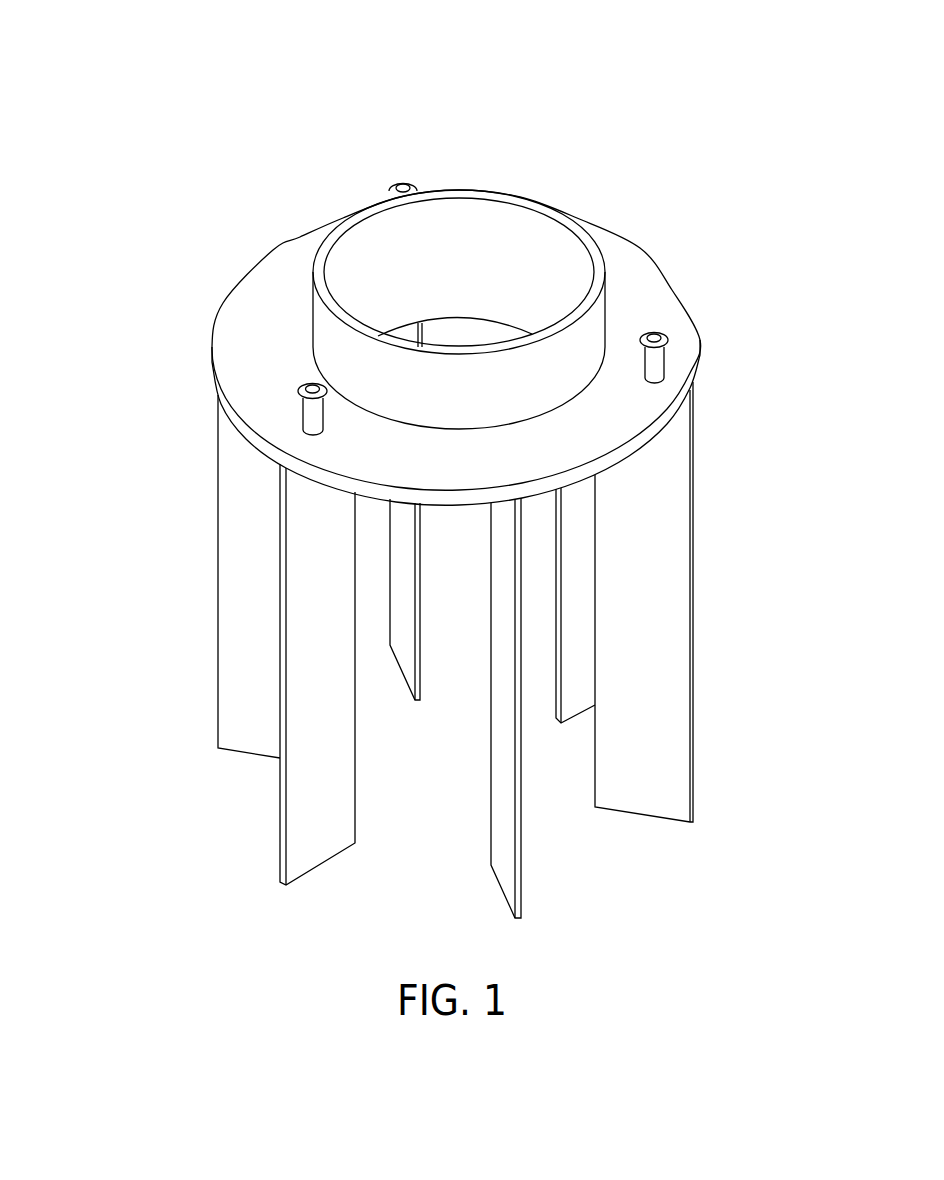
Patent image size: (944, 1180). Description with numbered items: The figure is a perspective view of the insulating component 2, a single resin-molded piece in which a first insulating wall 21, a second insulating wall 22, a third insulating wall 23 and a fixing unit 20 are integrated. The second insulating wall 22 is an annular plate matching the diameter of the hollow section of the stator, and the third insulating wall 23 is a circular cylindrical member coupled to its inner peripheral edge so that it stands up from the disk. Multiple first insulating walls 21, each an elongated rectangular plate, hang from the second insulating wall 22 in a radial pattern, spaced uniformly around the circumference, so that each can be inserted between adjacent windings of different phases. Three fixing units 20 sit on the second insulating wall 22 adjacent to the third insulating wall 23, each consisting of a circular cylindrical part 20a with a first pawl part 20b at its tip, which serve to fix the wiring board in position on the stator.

The insulating component 2 is at (670, 102).
The fixing unit 20 is at (449, 169).
The circular cylindrical part 20a is at (310, 411).
The first pawl part 20b is at (410, 186).
The first insulating wall 21 is at (673, 607).
The second insulating wall 22 is at (637, 264).
The third insulating wall 23 is at (322, 333).